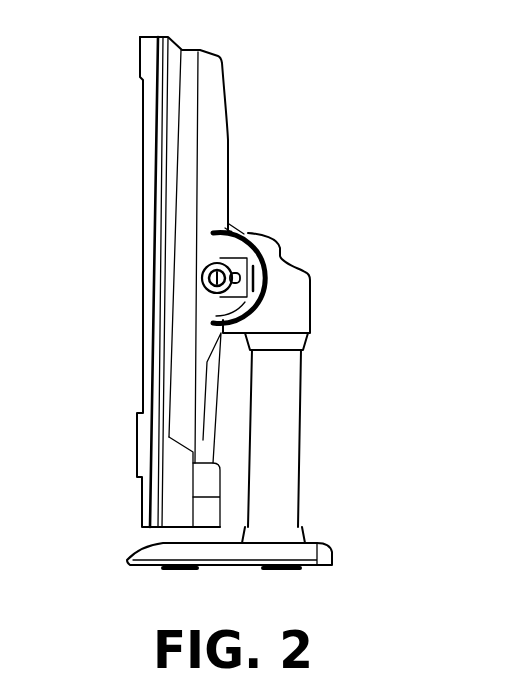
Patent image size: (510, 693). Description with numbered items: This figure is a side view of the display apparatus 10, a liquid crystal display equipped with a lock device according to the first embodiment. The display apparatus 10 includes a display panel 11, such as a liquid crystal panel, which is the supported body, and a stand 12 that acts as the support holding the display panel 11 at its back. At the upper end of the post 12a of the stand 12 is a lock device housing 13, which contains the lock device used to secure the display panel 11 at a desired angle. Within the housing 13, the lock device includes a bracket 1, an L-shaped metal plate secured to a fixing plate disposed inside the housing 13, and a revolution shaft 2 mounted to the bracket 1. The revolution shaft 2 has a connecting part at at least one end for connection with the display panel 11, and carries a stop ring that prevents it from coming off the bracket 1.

The display apparatus 10 is at (258, 143).
The display panel 11 is at (141, 188).
The bracket 1 is at (230, 242).
The revolution shaft 2 is at (203, 285).
The lock device housing 13 is at (312, 303).
The post 12a is at (302, 430).
The stand 12 is at (323, 505).